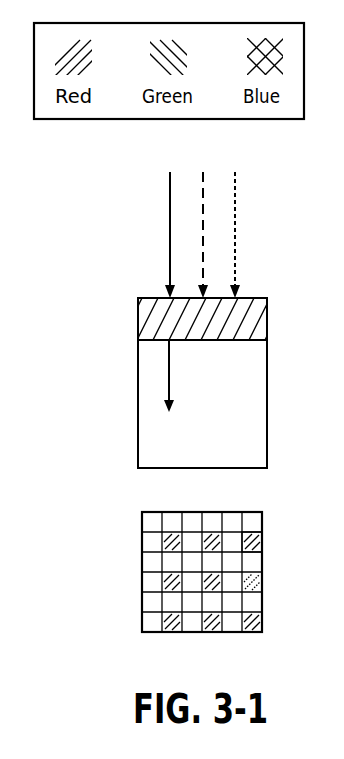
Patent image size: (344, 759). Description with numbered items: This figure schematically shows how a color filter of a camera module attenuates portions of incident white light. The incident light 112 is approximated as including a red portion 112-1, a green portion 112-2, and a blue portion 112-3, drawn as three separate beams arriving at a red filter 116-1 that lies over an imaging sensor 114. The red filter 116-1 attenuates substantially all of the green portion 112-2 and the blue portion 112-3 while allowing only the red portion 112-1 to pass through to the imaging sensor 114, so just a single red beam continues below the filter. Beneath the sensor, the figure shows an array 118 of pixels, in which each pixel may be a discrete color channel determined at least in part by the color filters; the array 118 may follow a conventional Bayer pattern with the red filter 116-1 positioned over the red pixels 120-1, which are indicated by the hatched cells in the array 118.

The red portion 112-1 is at (170, 211).
The green portion 112-2 is at (203, 189).
The blue portion 112-3 is at (236, 257).
The light 112 is at (332, 200).
The imaging sensor 114 is at (218, 457).
The red filter 116-1 is at (256, 323).
The array 118 is at (142, 540).
The red pixels 120-1 is at (252, 542).